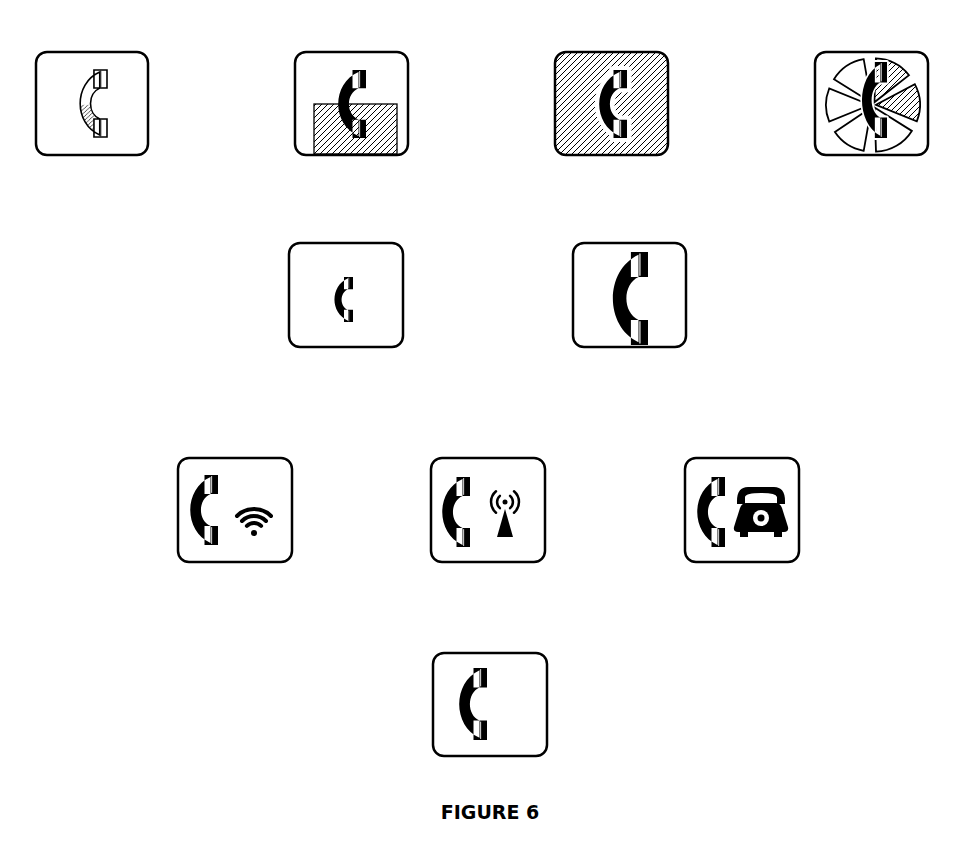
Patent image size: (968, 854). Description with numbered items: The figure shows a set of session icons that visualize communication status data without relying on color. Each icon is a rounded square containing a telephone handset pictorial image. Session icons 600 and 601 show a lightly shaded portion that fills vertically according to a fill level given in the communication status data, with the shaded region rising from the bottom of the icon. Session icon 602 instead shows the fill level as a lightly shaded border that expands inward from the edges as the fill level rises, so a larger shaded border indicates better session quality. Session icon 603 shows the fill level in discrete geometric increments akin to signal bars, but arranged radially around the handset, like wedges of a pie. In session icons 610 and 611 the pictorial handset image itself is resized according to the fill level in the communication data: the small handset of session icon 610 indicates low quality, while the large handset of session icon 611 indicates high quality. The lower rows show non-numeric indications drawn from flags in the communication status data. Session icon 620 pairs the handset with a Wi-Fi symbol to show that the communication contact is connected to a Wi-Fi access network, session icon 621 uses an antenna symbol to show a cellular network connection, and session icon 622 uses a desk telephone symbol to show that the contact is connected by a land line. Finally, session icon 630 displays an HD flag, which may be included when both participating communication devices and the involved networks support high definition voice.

The session icon 600 is at (64, 52).
The session icon 601 is at (325, 52).
The session icon 602 is at (585, 52).
The session icon 603 is at (845, 52).
The session icon 610 is at (320, 243).
The session icon 611 is at (601, 243).
The session icon 620 is at (206, 458).
The session icon 621 is at (459, 458).
The session icon 622 is at (713, 458).
The session icon 630 is at (463, 653).